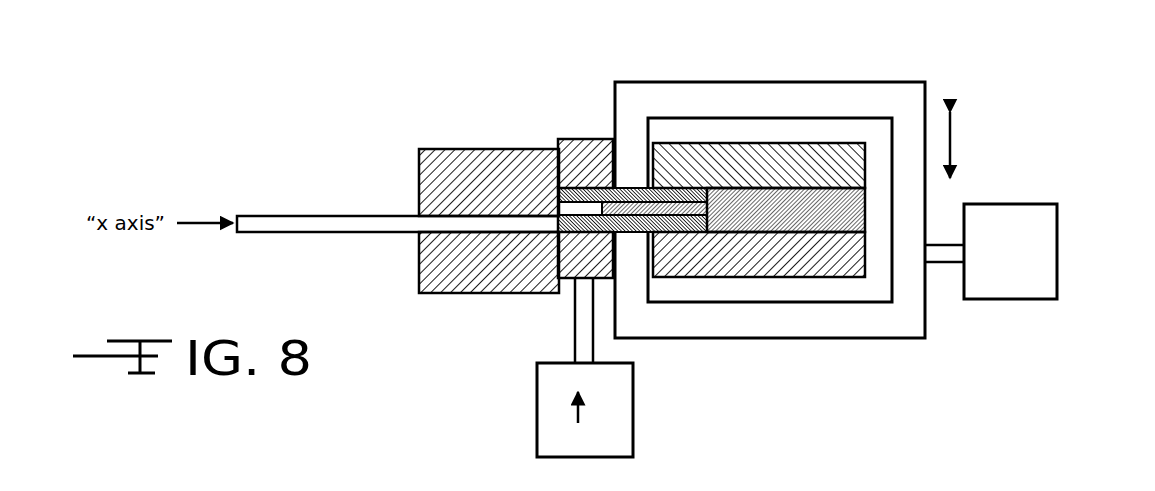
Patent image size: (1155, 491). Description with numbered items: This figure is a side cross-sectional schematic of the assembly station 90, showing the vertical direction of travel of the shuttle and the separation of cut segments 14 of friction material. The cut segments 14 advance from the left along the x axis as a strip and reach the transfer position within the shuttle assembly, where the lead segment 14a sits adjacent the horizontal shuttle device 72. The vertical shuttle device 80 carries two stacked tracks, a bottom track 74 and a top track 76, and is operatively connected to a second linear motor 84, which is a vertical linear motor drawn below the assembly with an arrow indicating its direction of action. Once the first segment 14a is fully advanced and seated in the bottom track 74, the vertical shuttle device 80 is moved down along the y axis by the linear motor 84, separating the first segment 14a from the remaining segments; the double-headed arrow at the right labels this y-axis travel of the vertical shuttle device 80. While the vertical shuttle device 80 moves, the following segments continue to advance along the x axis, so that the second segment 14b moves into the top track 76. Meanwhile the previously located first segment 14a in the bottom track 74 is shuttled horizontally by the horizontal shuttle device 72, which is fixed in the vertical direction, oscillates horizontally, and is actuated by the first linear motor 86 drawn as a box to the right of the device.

The assembly station 90 is at (377, 101).
The cut segments 14 is at (337, 216).
The lead segment 14a is at (584, 232).
The second segment 14b is at (584, 188).
The horizontal shuttle device 72 is at (665, 82).
The bottom track 74 is at (688, 195).
The top track 76 is at (740, 192).
The vertical shuttle device 80 is at (828, 136).
The second linear motor 84 is at (537, 398).
The first linear motor 86 is at (1057, 276).